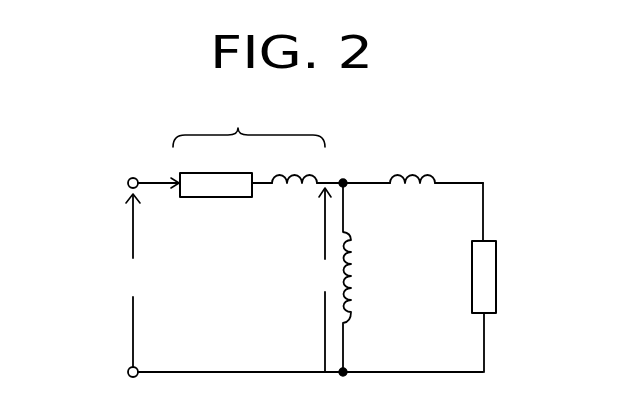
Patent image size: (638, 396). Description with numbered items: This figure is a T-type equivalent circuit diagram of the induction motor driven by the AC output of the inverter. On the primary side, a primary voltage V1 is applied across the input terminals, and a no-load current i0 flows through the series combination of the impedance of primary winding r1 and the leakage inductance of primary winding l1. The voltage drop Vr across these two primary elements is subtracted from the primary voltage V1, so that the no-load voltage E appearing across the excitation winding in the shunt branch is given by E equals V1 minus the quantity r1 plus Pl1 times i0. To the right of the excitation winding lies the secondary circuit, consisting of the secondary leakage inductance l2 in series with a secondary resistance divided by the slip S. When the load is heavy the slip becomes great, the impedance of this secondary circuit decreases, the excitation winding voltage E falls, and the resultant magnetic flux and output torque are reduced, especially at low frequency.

The no-load current i0 is at (158, 171).
The impedance of primary winding r1 is at (216, 171).
The leakage inductance of primary winding l1 is at (297, 165).
The voltage drop across primary impedance Vr is at (249, 126).
The primary voltage V1 is at (130, 280).
The excitation winding voltage E is at (322, 280).
The secondary leakage inductance l2 is at (413, 165).